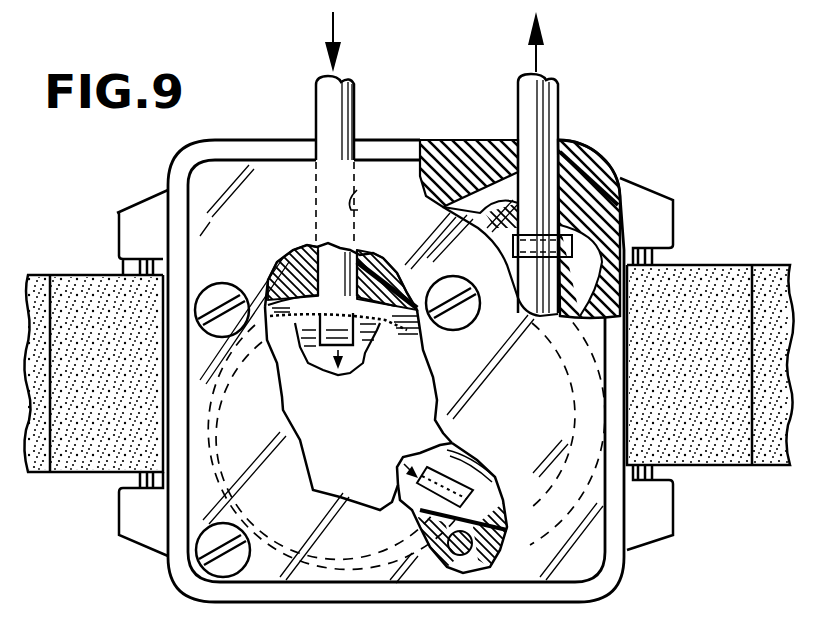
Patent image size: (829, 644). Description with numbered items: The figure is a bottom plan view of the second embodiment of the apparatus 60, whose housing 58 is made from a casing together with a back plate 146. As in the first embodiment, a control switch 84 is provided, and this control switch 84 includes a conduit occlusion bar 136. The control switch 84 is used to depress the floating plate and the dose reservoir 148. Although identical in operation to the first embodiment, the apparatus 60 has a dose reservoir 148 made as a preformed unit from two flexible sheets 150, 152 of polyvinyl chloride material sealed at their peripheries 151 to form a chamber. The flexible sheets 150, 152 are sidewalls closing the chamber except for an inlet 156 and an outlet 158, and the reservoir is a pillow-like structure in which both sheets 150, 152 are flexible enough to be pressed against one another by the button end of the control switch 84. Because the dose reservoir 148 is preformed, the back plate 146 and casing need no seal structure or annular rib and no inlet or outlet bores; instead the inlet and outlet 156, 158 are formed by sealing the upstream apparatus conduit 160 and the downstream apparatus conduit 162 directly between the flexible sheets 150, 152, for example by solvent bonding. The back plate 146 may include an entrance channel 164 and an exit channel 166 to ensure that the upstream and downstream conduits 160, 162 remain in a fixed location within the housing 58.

The back plate 146 is at (595, 562).
The dose reservoir 148 is at (360, 362).
The flexible sheet 150 is at (344, 324).
The peripheries 151 is at (326, 560).
The flexible sheet 152 is at (359, 441).
The inlet 156 is at (274, 372).
The outlet 158 is at (496, 391).
The upstream apparatus conduit 160 is at (318, 106).
The downstream apparatus conduit 162 is at (560, 103).
The entrance channel 164 is at (360, 209).
The exit channel 166 is at (553, 382).
The control switch 84 is at (486, 160).
The apparatus 60 is at (624, 136).
The housing 58 is at (636, 170).
The conduit occlusion bar 136 is at (592, 237).